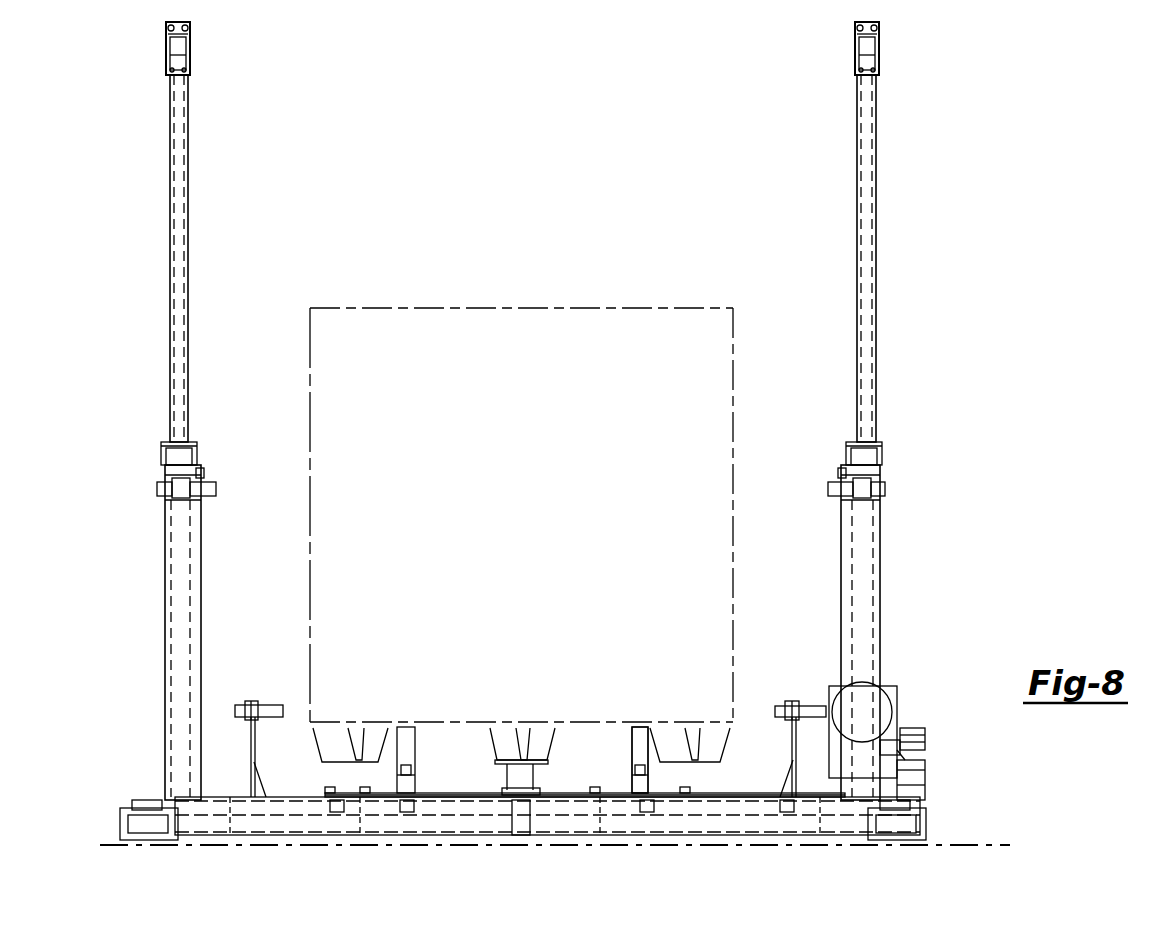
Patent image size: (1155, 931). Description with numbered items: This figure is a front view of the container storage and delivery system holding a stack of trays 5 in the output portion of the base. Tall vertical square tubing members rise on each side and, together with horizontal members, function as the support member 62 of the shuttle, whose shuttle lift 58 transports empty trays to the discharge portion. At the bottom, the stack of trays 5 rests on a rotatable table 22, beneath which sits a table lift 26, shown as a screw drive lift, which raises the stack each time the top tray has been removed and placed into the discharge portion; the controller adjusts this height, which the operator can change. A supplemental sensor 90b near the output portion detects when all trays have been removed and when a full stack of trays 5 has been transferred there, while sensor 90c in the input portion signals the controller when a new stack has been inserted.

The stack of trays 5 is at (727, 408).
The rotatable table 22 is at (530, 778).
The table lift 26 is at (643, 762).
The shuttle lift 58 is at (895, 697).
The support member 62 is at (878, 400).
The supplemental sensor 90b is at (790, 705).
The sensor 90c is at (270, 705).